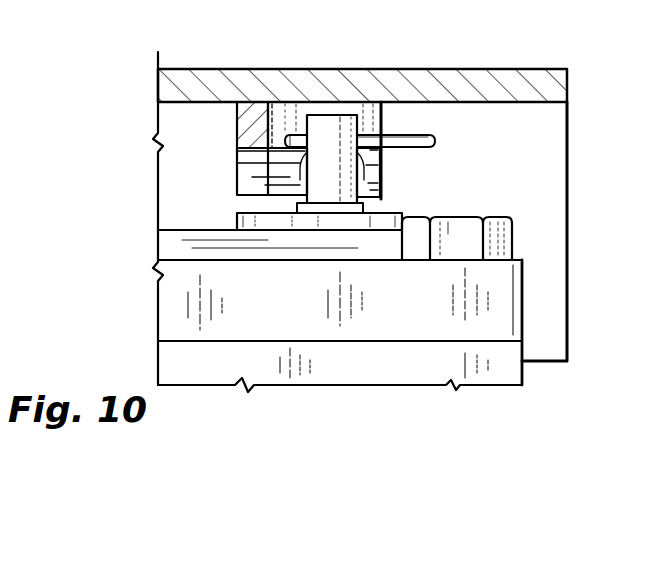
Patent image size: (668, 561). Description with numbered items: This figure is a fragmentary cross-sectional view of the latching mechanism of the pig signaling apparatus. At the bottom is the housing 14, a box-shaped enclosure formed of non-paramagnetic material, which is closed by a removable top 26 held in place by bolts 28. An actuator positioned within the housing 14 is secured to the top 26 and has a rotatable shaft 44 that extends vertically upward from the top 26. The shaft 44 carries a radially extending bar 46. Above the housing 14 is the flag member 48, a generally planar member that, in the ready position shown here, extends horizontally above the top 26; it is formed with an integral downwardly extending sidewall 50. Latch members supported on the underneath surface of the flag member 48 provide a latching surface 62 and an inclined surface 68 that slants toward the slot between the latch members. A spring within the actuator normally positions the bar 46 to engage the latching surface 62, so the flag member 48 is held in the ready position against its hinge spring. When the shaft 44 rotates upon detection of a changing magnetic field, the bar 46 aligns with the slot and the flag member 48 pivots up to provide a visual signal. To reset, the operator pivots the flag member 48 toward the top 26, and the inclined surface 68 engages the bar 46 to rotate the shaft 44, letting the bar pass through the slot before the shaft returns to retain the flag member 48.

The flag member 48 is at (208, 82).
The latching surface 62 is at (374, 152).
The bar 46 is at (410, 137).
The rotatable shaft 44 is at (322, 186).
The inclined surface 68 is at (383, 177).
The bolt 28 is at (456, 232).
The sidewall 50 is at (547, 203).
The removable top 26 is at (503, 305).
The housing 14 is at (524, 352).